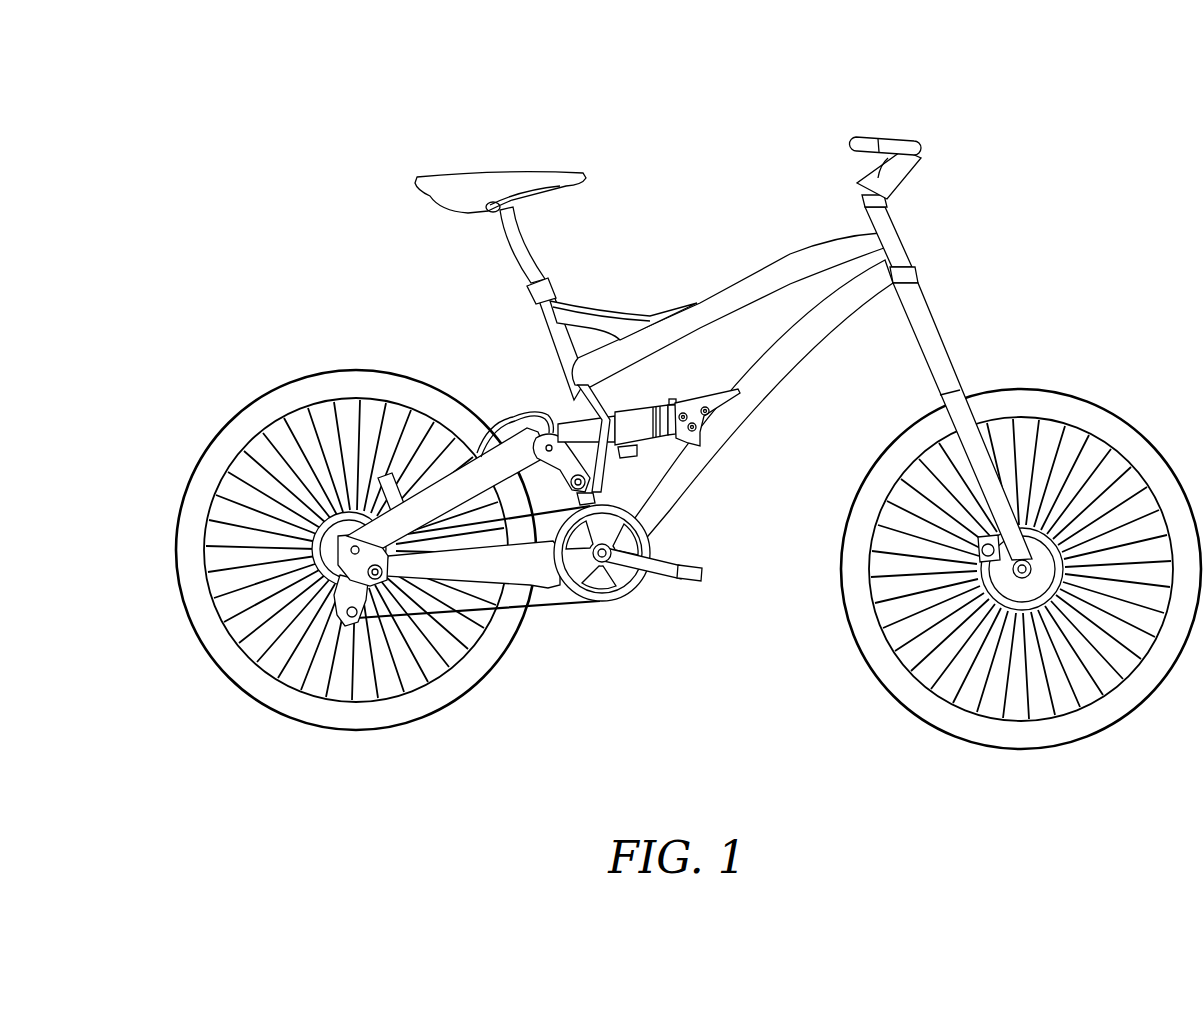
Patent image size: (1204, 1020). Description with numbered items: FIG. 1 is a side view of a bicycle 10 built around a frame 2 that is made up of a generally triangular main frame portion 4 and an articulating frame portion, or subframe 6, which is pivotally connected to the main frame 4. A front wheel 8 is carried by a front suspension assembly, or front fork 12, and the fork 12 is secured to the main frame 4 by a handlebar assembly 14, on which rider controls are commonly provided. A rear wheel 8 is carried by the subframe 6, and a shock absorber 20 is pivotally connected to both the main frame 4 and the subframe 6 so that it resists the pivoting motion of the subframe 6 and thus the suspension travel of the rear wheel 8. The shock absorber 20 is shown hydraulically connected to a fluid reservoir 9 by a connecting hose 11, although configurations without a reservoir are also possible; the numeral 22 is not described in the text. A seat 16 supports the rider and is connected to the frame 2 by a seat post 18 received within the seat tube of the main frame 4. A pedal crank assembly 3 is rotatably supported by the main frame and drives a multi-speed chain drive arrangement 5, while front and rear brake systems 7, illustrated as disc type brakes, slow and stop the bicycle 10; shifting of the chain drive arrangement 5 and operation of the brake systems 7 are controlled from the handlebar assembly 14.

The bicycle 10 is at (743, 108).
The frame 2 is at (771, 166).
The main frame portion 4 is at (774, 244).
The handlebar assembly 14 is at (881, 142).
The seat 16 is at (507, 170).
The seat post 18 is at (536, 252).
The front fork 12 is at (934, 318).
The wheel 8 is at (287, 382).
The brake system 7 is at (333, 505).
The fluid reservoir 9 is at (398, 470).
The connecting hose 11 is at (475, 447).
The rear shock absorber 22 is at (648, 404).
The shock absorber 20 is at (692, 393).
The pedal crank assembly 3 is at (660, 553).
The multi-speed chain drive arrangement 5 is at (556, 640).
The subframe 6 is at (483, 578).